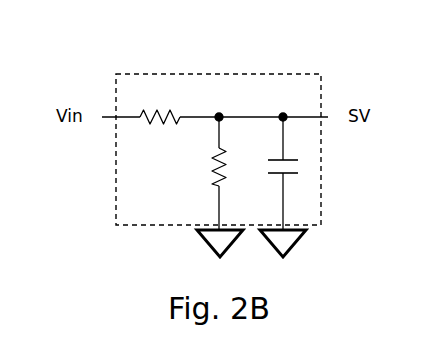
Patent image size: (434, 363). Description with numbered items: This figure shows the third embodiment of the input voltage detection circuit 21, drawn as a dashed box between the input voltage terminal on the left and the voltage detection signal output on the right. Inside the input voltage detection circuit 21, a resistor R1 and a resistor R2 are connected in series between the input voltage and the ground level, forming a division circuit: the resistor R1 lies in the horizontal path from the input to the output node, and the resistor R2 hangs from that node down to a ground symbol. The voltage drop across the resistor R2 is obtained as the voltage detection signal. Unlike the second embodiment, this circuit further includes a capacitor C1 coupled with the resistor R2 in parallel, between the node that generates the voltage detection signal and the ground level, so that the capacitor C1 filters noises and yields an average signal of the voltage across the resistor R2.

The input voltage detection circuit 21 is at (147, 214).
The resistor R1 is at (160, 105).
The resistor R2 is at (199, 173).
The capacitor C1 is at (269, 173).